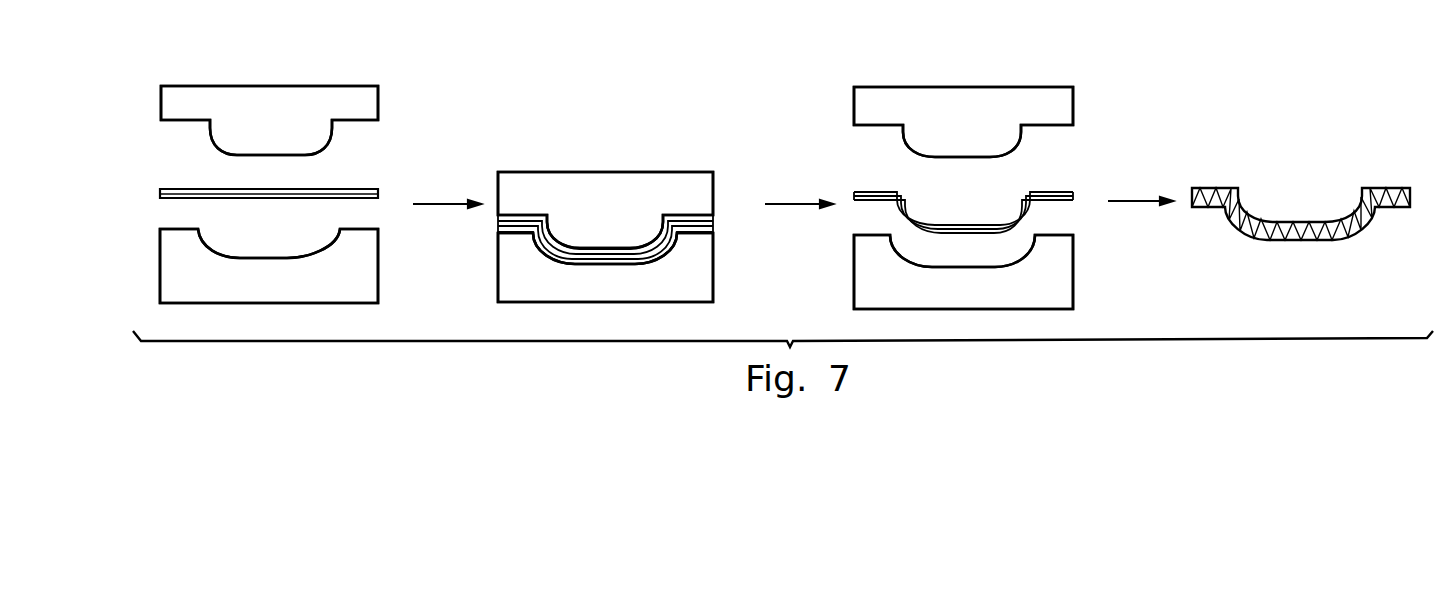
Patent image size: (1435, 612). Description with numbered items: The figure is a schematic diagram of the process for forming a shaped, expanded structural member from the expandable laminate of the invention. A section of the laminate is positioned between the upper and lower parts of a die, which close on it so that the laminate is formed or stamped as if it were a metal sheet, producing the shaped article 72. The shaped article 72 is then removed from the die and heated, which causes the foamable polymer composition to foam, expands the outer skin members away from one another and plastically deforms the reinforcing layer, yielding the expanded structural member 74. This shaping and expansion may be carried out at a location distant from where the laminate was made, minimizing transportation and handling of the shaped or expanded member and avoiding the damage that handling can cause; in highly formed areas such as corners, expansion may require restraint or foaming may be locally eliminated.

The shaped article 72 is at (1058, 191).
The expanded structural member 74 is at (1358, 230).